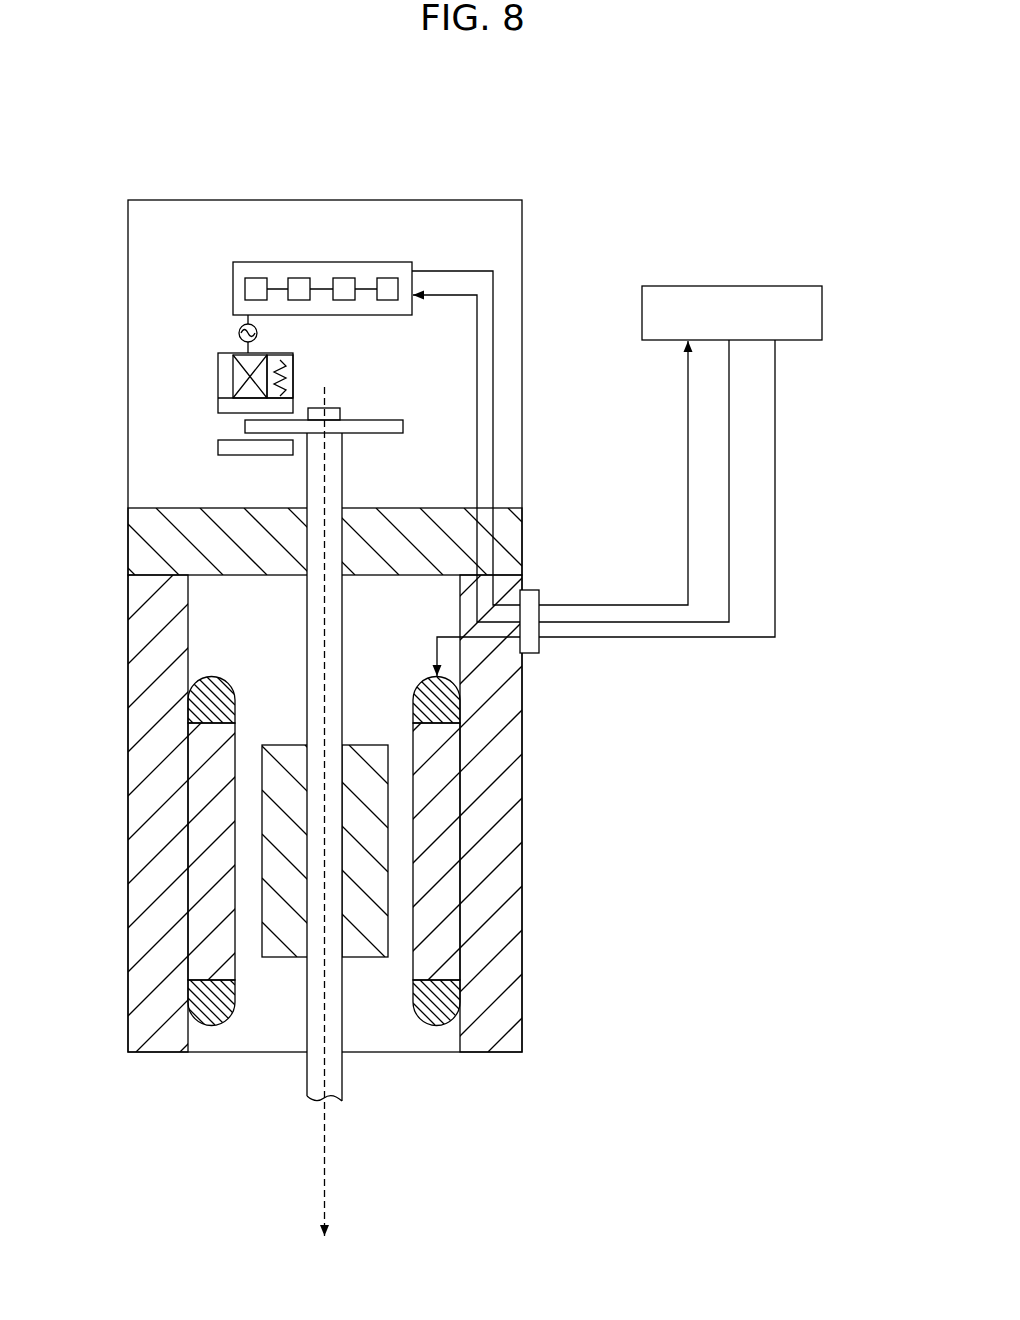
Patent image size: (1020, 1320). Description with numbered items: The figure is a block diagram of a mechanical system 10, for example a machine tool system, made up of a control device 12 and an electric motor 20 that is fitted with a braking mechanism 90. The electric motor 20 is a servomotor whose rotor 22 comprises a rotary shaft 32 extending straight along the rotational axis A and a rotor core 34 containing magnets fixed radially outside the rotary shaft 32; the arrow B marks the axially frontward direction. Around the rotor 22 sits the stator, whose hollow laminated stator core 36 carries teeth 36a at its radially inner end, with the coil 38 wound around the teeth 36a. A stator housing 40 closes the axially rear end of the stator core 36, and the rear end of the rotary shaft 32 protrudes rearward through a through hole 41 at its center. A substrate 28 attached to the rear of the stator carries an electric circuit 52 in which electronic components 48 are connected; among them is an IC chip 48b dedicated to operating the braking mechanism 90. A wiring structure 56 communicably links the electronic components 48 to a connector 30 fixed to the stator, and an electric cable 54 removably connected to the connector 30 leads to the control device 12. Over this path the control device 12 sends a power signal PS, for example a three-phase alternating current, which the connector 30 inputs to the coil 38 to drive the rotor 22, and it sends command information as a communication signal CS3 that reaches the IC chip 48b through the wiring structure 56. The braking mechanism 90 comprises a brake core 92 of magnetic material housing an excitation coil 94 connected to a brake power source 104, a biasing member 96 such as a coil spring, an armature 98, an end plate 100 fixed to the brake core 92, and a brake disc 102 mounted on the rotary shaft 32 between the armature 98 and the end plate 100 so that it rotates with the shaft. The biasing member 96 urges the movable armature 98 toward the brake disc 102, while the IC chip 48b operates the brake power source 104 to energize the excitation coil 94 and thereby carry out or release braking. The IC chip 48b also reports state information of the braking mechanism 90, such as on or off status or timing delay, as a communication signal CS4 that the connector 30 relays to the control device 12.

The mechanical system 10 is at (733, 101).
The control device 12 is at (775, 286).
The electric motor 20 is at (145, 150).
The rotor 22 is at (362, 1087).
The substrate 28 is at (326, 247).
The connector 30 is at (530, 655).
The rotary shaft 32 is at (343, 625).
The rotor core 34 is at (280, 748).
The stator core 36 is at (135, 793).
The teeth 36a is at (231, 866).
The coil 38 is at (209, 678).
The stator housing 40 is at (130, 542).
The through hole 41 is at (336, 527).
The electronic components 48 is at (347, 300).
The IC chip 48b is at (255, 278).
The electric circuit 52 is at (323, 262).
The electric cable 54 is at (803, 517).
The wiring structure 56 is at (505, 447).
The braking mechanism 90 is at (201, 344).
The brake core 92 is at (230, 366).
The excitation coil 94 is at (233, 379).
The biasing member 96 is at (285, 372).
The armature 98 is at (225, 405).
The end plate 100 is at (225, 447).
The brake disc 102 is at (385, 420).
The brake power source 104 is at (238, 331).
The communication signal CS3 is at (478, 372).
The communication signal CS4 is at (500, 327).
The power signal PS is at (775, 598).
The rotational axis A is at (324, 1153).
The arrow B is at (299, 1205).